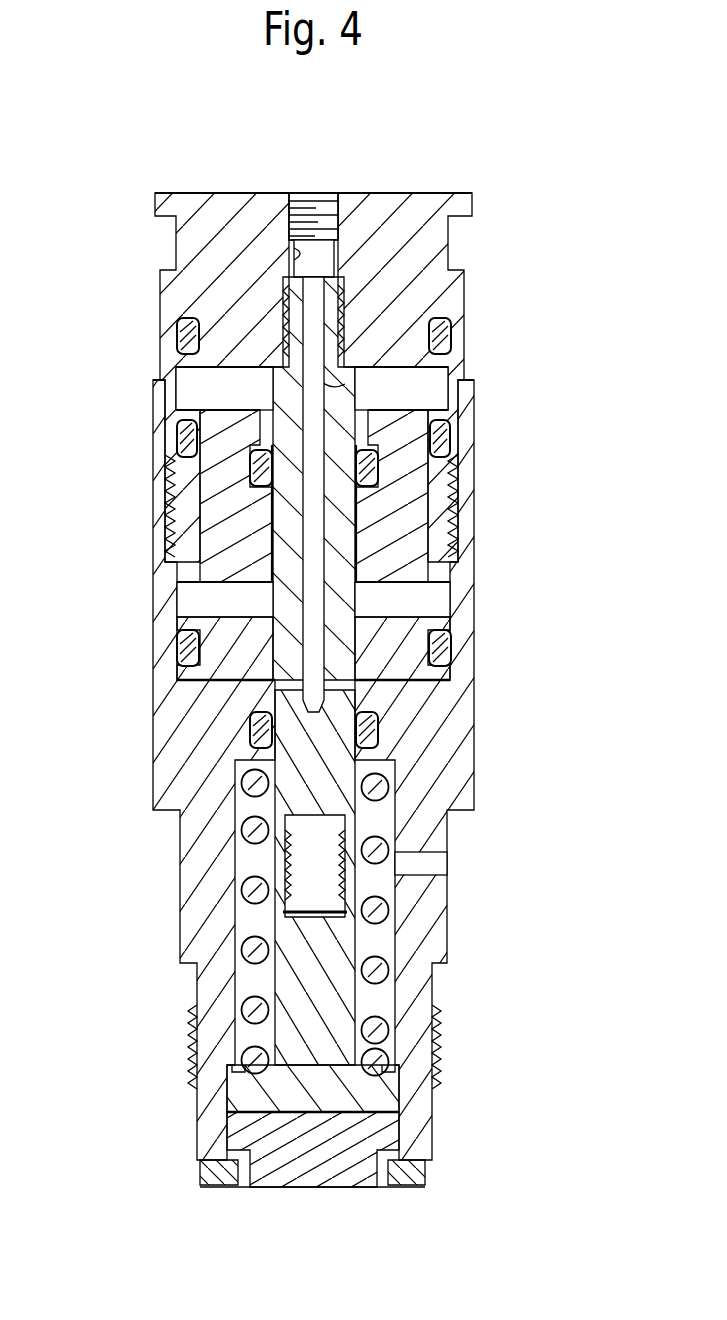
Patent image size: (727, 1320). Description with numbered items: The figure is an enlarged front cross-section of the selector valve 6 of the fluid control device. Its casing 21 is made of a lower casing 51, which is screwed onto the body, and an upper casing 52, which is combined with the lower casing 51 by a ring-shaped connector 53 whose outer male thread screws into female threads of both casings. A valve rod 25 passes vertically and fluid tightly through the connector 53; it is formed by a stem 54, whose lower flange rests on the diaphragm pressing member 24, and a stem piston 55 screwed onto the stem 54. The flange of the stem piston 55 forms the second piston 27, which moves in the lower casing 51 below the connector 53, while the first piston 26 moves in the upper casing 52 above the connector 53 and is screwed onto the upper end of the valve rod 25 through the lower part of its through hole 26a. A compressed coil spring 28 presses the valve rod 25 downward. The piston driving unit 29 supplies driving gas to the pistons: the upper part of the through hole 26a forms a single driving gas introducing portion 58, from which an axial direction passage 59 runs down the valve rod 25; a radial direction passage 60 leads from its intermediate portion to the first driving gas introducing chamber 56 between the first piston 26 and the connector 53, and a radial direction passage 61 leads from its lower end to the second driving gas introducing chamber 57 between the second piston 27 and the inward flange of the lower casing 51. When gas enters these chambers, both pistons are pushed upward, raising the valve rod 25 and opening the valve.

The driving gas introducing portion 58 is at (300, 198).
The piston driving unit 29 is at (329, 190).
The through hole 26a is at (296, 262).
The first piston 26 is at (436, 244).
The upper casing 52 is at (178, 330).
The axial direction passage 59 is at (400, 392).
The first driving gas introducing chamber 56 is at (200, 388).
The radial direction passage 60 is at (252, 470).
The selector valve 6 is at (497, 491).
The connector 53 is at (215, 545).
The stem piston 55 is at (290, 600).
The second piston 27 is at (400, 632).
The second driving gas introducing chamber 57 is at (290, 692).
The radial direction passage 61 is at (262, 722).
The casing 21 is at (562, 785).
The compressed coil spring 28 is at (420, 850).
The lower casing 51 is at (192, 922).
The valve rod 25 is at (335, 1000).
The stem 54 is at (290, 1035).
The diaphragm pressing member 24 is at (380, 1136).